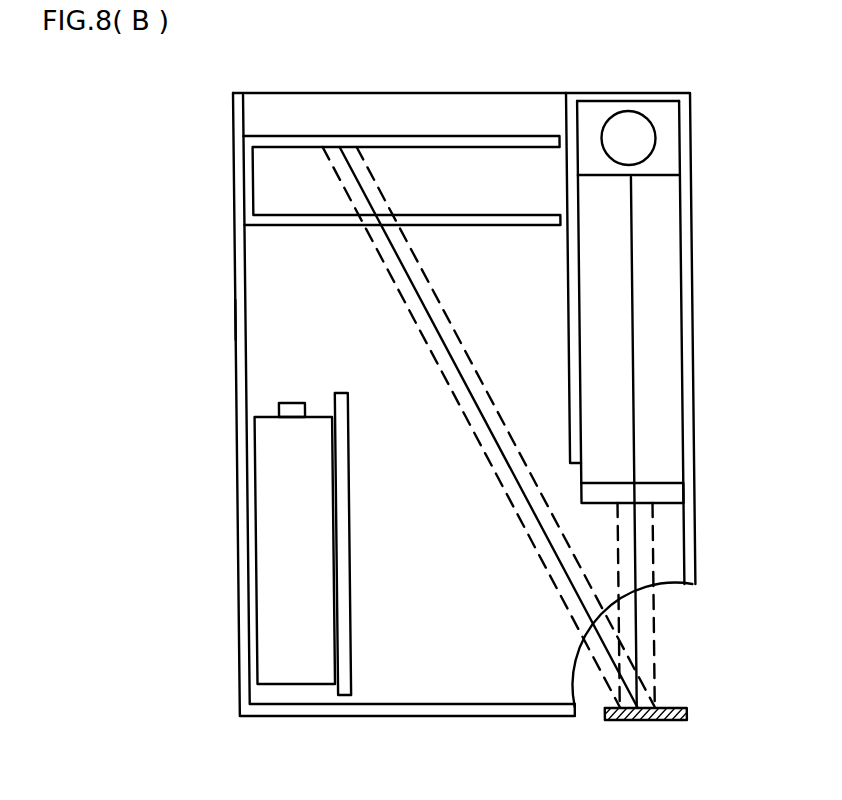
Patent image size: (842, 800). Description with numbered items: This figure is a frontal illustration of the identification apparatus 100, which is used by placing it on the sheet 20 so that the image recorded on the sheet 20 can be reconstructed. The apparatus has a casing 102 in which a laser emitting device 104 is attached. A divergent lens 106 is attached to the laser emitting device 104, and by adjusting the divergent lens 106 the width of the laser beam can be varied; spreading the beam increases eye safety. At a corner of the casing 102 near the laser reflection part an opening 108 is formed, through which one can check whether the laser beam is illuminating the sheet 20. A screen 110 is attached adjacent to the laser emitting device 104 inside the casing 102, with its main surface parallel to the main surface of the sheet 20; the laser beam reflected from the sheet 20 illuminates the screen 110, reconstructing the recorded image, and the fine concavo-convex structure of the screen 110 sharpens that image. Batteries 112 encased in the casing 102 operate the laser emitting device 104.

The identification apparatus 100 is at (692, 101).
The casing 102 is at (238, 300).
The laser emitting device 104 is at (668, 328).
The divergent lens 106 is at (670, 492).
The opening 108 is at (676, 597).
The screen 110 is at (395, 137).
The batteries 112 is at (265, 552).
The sheet 20 is at (648, 720).